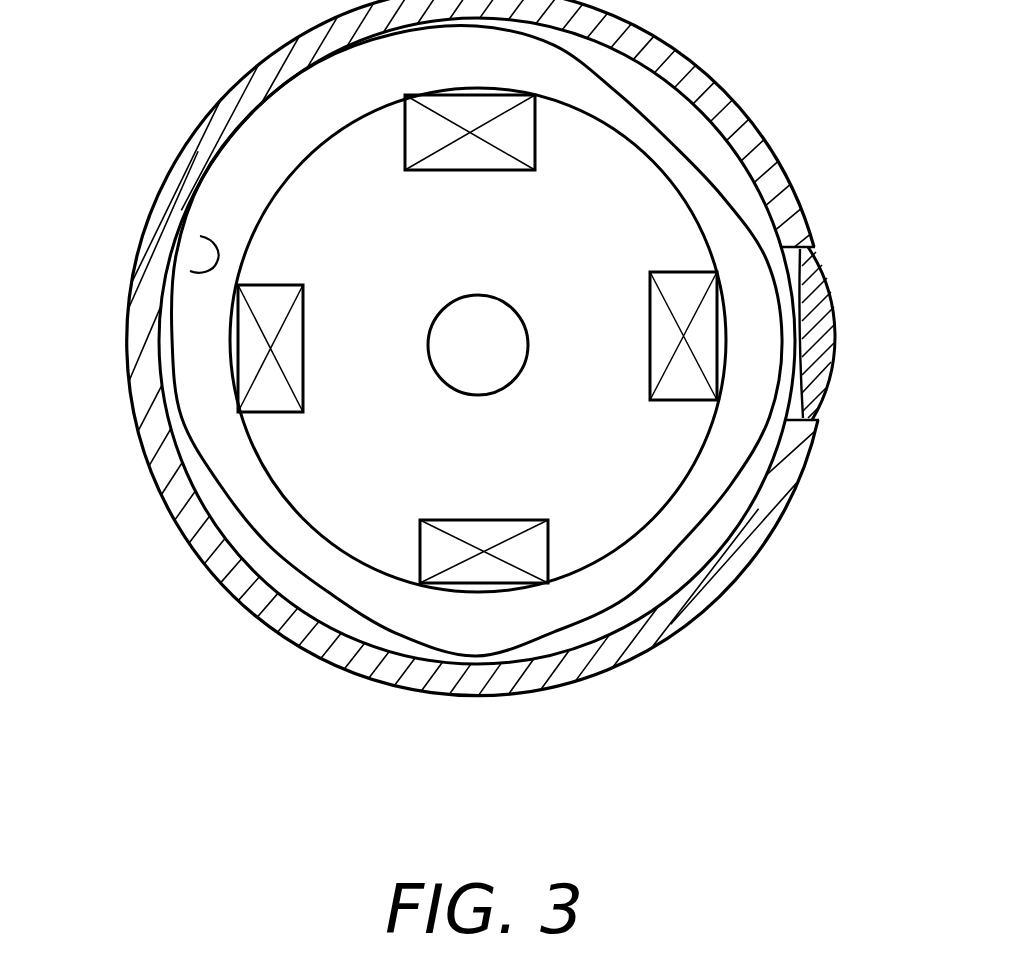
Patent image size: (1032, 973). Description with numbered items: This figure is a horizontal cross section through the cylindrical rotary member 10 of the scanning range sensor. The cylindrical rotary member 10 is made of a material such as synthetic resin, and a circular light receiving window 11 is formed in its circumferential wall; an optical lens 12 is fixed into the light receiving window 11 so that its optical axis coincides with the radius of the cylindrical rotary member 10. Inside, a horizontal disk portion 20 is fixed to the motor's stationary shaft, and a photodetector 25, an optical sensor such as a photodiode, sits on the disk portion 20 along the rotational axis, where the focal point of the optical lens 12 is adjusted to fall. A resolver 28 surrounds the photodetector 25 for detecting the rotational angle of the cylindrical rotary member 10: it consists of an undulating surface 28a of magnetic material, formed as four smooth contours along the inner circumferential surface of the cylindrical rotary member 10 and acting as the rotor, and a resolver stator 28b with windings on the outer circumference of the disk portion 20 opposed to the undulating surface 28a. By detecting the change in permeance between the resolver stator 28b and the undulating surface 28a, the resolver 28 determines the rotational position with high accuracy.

The cylindrical rotary member 10 is at (748, 552).
The light receiving window 11 is at (832, 389).
The optical lens 12 is at (824, 284).
The disk portion 20 is at (620, 183).
The photodetector 25 is at (512, 310).
The resolver 28 is at (318, 407).
The undulating surface 28a is at (190, 271).
The resolver stator 28b is at (287, 283).